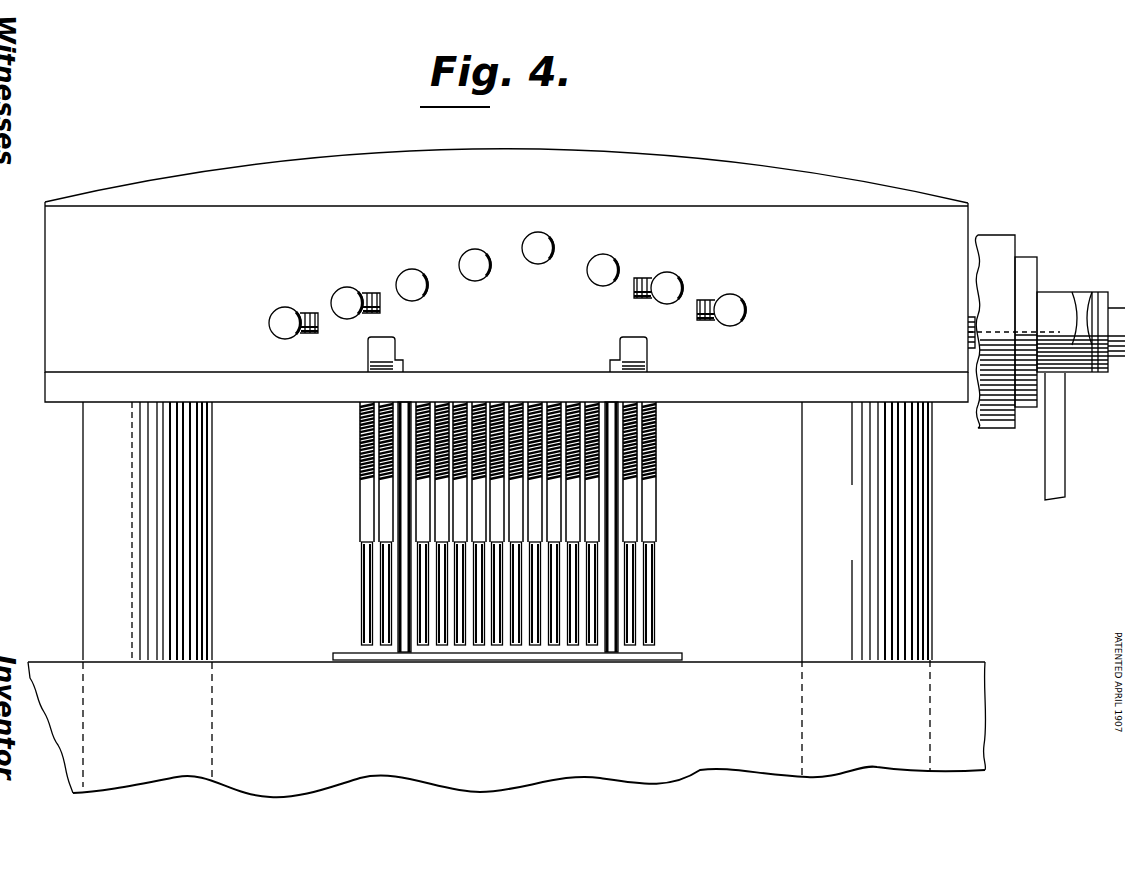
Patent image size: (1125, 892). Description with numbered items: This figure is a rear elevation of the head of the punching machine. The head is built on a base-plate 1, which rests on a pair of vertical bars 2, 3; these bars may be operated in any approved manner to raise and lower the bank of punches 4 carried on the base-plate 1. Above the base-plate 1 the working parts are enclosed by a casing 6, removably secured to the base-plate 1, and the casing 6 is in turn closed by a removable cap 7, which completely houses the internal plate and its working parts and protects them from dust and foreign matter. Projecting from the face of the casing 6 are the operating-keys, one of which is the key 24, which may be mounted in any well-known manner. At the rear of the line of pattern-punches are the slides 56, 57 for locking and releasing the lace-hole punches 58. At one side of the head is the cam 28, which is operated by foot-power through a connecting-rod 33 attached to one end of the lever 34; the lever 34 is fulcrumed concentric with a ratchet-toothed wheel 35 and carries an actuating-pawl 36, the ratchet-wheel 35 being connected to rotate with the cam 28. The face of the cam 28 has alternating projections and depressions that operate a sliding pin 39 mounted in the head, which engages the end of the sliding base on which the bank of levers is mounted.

The base-plate 1 is at (192, 380).
The vertical bar 2 is at (147, 531).
The vertical bar 3 is at (867, 531).
The bank of punches 4 is at (572, 647).
The casing 6 is at (506, 287).
The removable cap 7 is at (506, 177).
The operating-key 24 is at (465, 258).
The cam 28 is at (992, 252).
The connecting-rod 33 is at (1057, 460).
The lever 34 is at (1078, 345).
The ratchet-toothed wheel 35 is at (1037, 263).
The actuating-pawl 36 is at (1030, 293).
The sliding pin 39 is at (968, 327).
The slide 56 is at (628, 350).
The slide 57 is at (393, 347).
The lace-hole punches 58 is at (403, 638).